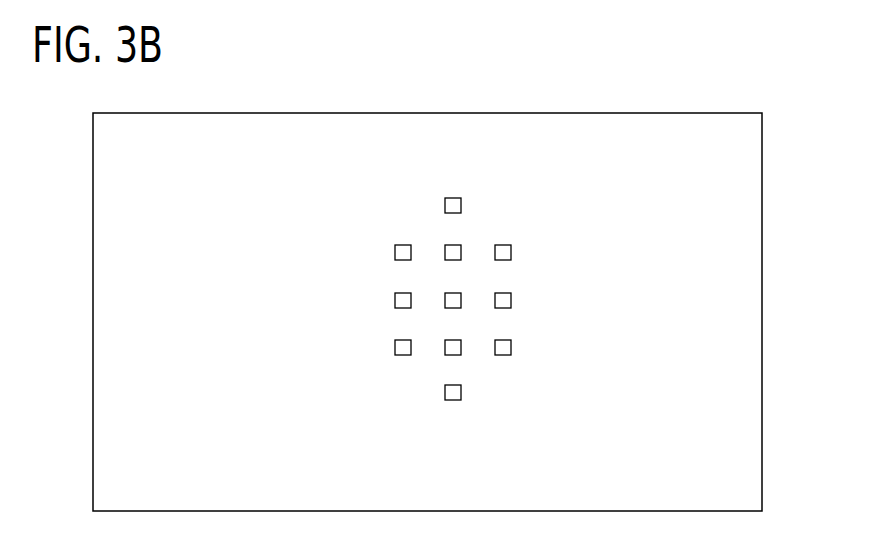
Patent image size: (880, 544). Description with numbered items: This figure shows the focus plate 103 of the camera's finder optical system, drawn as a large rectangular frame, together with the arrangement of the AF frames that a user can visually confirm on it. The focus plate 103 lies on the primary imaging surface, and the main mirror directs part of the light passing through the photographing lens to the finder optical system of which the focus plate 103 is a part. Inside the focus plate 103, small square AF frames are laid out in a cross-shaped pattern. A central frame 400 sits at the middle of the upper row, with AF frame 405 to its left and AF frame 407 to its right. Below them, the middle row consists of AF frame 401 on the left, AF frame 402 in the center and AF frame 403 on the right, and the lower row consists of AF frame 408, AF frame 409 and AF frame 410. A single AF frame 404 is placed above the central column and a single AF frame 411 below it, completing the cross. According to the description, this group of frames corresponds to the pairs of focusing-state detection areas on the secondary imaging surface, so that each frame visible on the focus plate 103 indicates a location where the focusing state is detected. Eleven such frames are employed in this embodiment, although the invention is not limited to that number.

The focus plate 103 is at (763, 302).
The center focus detection area 400 is at (461, 245).
The AF frame 401 is at (394, 299).
The AF frame 402 is at (462, 301).
The AF frame 403 is at (513, 300).
The AF frame 404 is at (452, 197).
The AF frame 405 is at (394, 250).
The AF frame 407 is at (513, 252).
The AF frame 408 is at (394, 346).
The AF frame 409 is at (462, 349).
The AF frame 410 is at (513, 347).
The AF frame 411 is at (453, 401).